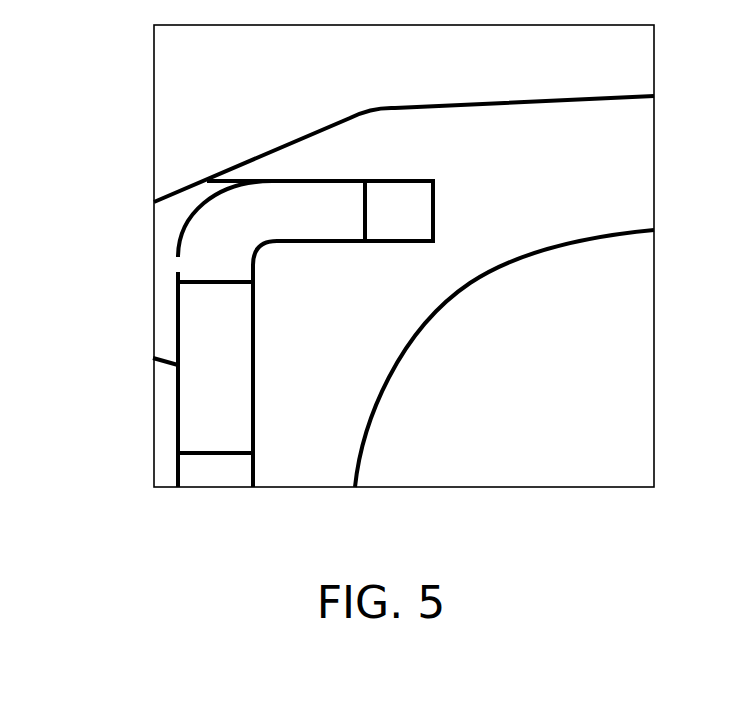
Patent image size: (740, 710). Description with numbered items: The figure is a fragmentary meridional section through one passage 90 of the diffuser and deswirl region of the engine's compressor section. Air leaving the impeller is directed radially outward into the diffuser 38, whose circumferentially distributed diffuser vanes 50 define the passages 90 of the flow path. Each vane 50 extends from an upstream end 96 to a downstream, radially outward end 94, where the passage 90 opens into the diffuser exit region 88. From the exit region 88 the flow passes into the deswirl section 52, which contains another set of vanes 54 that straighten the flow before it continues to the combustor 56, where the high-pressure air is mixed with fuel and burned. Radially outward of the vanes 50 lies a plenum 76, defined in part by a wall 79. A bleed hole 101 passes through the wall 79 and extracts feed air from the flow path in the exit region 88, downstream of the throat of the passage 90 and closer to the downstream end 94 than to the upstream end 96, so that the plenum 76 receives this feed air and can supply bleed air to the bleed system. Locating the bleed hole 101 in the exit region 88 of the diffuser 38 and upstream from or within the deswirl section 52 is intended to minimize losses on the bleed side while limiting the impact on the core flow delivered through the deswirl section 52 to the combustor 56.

The diffuser 38 is at (275, 330).
The diffuser vanes 50 is at (194, 320).
The deswirl section 52 is at (352, 152).
The vanes 54 is at (407, 212).
The combustor 56 is at (483, 367).
The plenum 76 is at (168, 222).
The wall 79 is at (178, 378).
The diffuser exit region 88 is at (262, 268).
The passages 90 is at (209, 365).
The downstream ends 94 is at (218, 280).
The upstream ends 96 is at (205, 455).
The bleed hole 101 is at (178, 265).